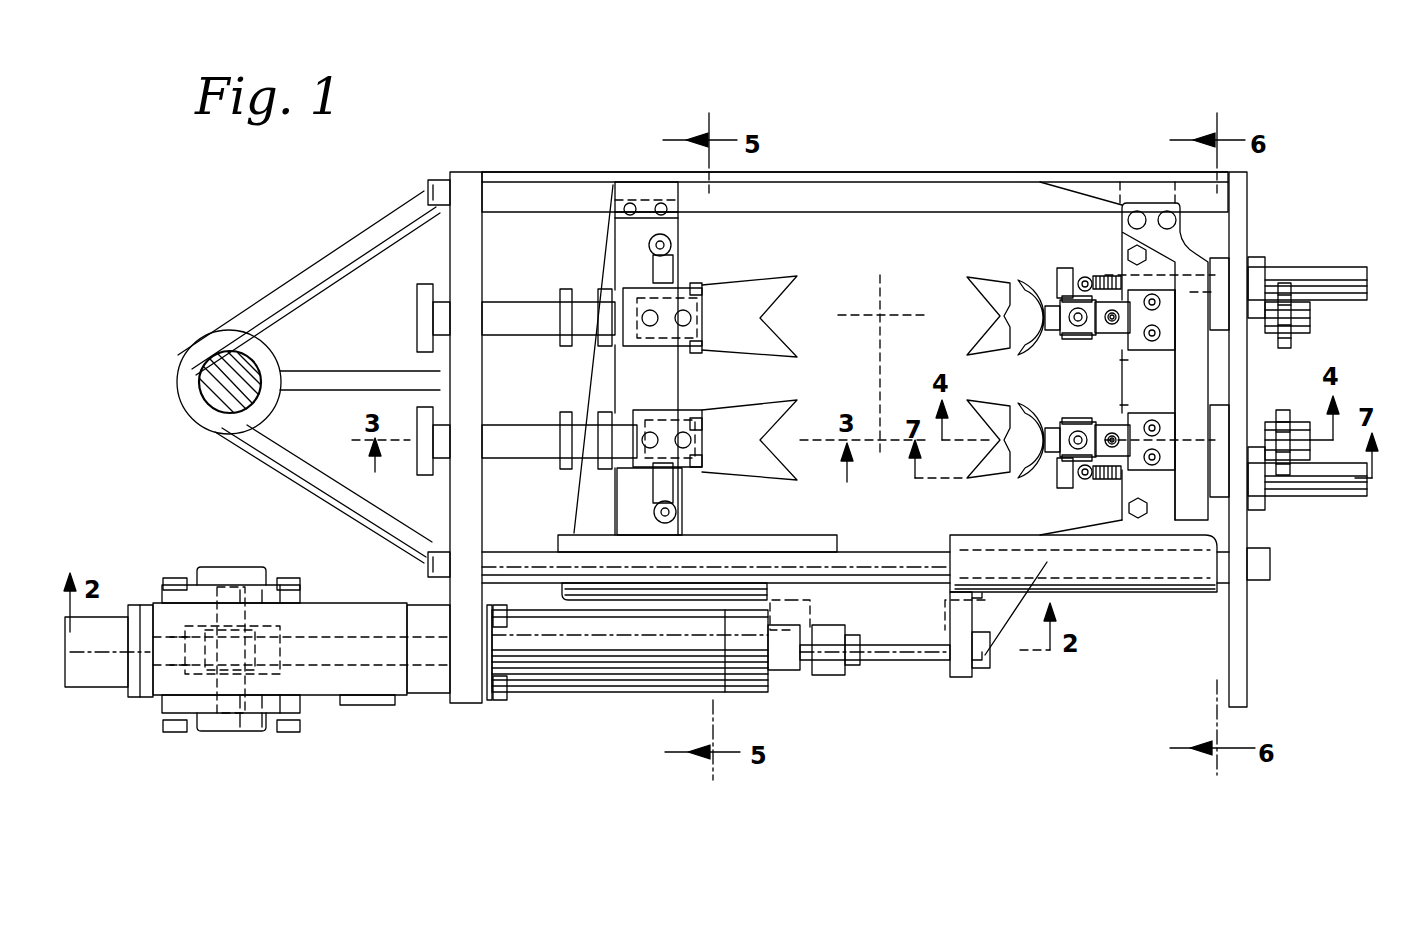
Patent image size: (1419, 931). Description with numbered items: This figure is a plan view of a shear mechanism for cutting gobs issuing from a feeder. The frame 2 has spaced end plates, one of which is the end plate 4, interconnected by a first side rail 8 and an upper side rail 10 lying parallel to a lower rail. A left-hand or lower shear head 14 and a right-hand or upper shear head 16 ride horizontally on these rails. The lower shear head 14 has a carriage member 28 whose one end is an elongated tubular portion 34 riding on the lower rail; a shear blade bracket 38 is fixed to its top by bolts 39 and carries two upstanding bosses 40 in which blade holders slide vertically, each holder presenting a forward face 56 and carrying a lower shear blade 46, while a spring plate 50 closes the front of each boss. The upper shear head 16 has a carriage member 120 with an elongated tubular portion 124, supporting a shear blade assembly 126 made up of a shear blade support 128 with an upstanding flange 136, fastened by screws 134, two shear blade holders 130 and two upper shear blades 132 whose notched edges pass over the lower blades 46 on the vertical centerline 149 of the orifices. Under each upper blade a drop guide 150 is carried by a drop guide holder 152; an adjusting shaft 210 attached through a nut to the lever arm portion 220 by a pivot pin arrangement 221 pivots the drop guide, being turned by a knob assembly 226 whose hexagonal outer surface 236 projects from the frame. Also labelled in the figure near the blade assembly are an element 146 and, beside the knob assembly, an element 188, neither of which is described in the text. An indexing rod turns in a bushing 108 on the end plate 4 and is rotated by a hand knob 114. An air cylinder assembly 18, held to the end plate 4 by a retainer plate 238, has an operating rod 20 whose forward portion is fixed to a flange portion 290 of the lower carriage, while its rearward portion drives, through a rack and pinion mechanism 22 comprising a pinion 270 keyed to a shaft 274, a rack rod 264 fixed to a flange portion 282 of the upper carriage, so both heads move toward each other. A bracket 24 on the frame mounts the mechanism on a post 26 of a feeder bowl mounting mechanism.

The frame 2 is at (840, 172).
The end plate 4 is at (462, 186).
The first side rail 8 is at (878, 181).
The upper side rail 10 is at (880, 553).
The left-hand or lower shear head 14 is at (700, 284).
The right-hand or upper shear head 16 is at (1038, 292).
The air cylinder assembly 18 is at (610, 690).
The operating rod 20 is at (805, 640).
The rack and pinion mechanism 22 is at (244, 734).
The bracket 24 is at (310, 272).
The post 26 is at (220, 380).
The carriage member 28 is at (626, 228).
The elongated tubular portion 34 is at (797, 540).
The shear blade bracket 38 is at (676, 270).
The bolts 39 is at (667, 246).
The upstanding bosses 40 is at (665, 350).
The lower shear blade 46 is at (749, 378).
The spring plate 50 is at (692, 290).
The forward face 56 is at (1238, 205).
The bushing 108 is at (515, 310).
The hand knob 114 is at (424, 318).
The carriage member 120 is at (1200, 246).
The elongated tubular portion 124 is at (1185, 585).
The shear blade assembly 126 is at (1128, 383).
The shear blade support 128 is at (1128, 400).
The shear blade holders 130 is at (1112, 332).
The upper shear blades 132 is at (975, 285).
The screws 134 is at (1120, 202).
The upstanding flange 136 is at (1200, 363).
The guide bracket 146 is at (1150, 342).
The vertical centerline 149 is at (880, 315).
The drop guide 150 is at (1022, 290).
The drop guide holder 152 is at (1072, 420).
The nut 188 is at (1292, 326).
The adjusting shaft 210 is at (1102, 280).
The lever arm portion 220 is at (1062, 290).
The pivot pin arrangement 221 is at (1082, 276).
The knob assembly 226 is at (1330, 272).
The outer surface 236 is at (1293, 276).
The retainer plate 238 is at (496, 688).
The rack rod 264 is at (340, 662).
The pinion 270 is at (275, 658).
The shaft 274 is at (230, 615).
The flange portion 282 is at (963, 672).
The flange portion 290 is at (828, 672).